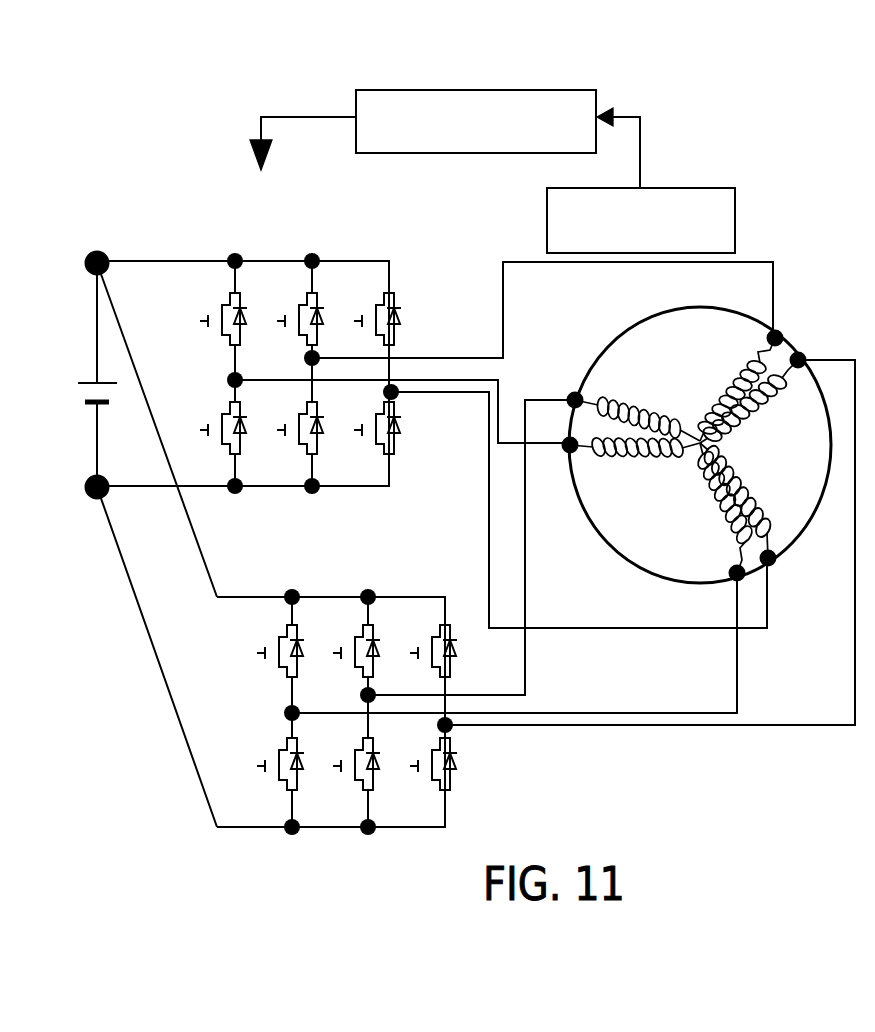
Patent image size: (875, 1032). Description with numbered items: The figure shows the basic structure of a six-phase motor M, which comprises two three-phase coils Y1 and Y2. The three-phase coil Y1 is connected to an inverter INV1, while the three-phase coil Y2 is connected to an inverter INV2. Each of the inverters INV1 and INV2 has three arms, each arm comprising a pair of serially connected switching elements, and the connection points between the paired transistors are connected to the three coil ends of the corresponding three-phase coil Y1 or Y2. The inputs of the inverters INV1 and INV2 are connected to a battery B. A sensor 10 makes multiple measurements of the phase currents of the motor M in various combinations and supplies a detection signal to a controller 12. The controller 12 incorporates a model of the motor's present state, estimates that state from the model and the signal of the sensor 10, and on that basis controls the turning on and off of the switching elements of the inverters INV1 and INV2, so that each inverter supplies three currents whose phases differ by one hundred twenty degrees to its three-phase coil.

The controller 12 is at (467, 84).
The sensor 10 is at (735, 222).
The battery B is at (76, 375).
The inverter INV1 is at (249, 357).
The inverter INV2 is at (337, 697).
The six-phase motor M is at (690, 443).
The three-phase coil Y1 is at (684, 448).
The three-phase coil Y2 is at (693, 466).